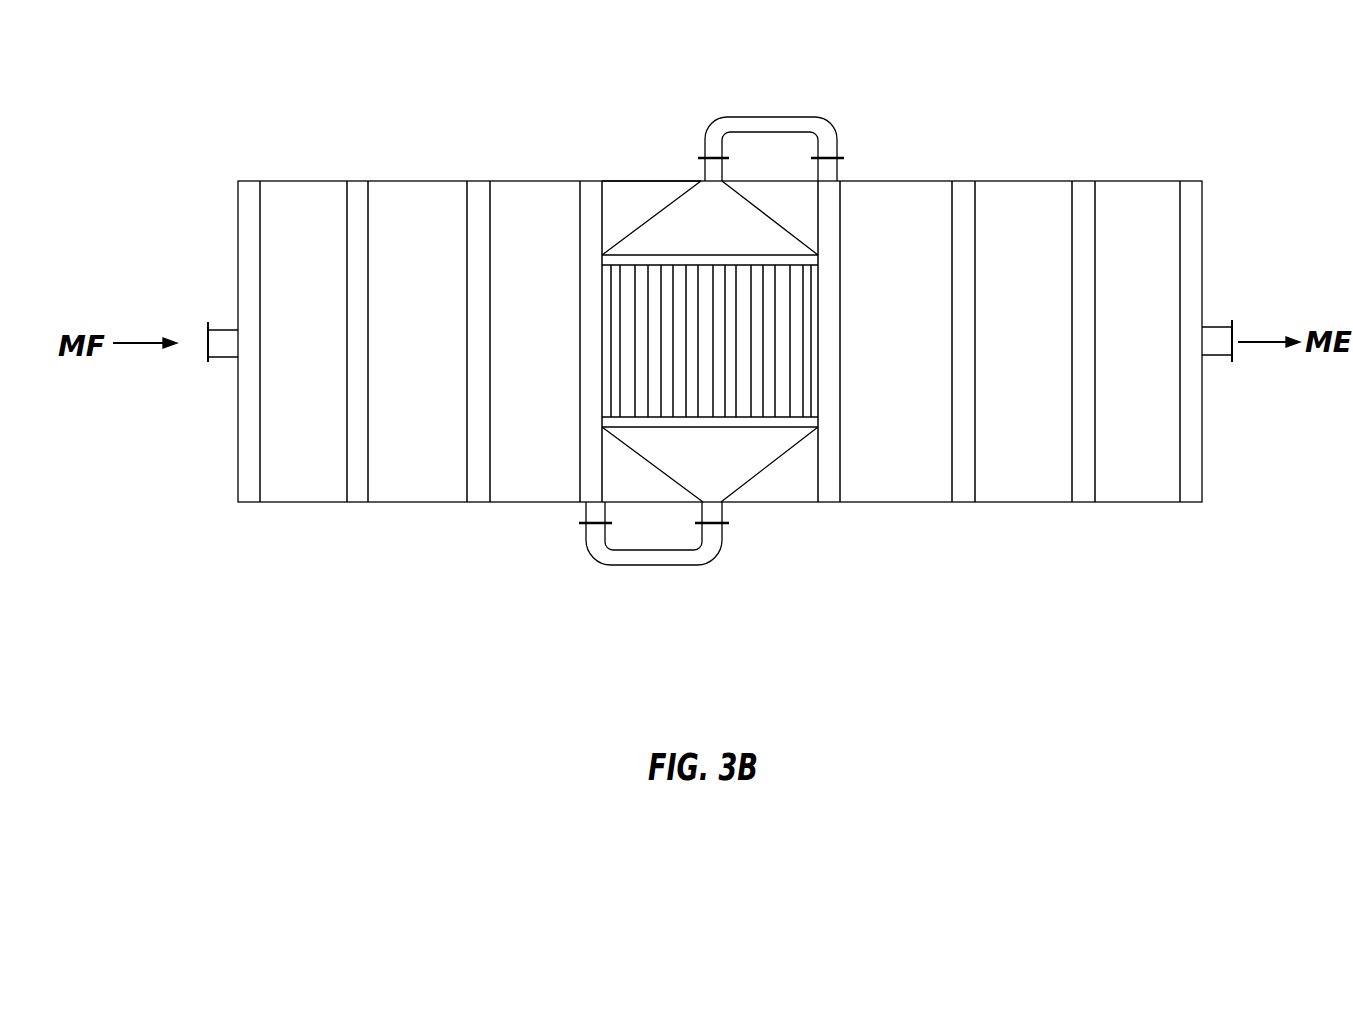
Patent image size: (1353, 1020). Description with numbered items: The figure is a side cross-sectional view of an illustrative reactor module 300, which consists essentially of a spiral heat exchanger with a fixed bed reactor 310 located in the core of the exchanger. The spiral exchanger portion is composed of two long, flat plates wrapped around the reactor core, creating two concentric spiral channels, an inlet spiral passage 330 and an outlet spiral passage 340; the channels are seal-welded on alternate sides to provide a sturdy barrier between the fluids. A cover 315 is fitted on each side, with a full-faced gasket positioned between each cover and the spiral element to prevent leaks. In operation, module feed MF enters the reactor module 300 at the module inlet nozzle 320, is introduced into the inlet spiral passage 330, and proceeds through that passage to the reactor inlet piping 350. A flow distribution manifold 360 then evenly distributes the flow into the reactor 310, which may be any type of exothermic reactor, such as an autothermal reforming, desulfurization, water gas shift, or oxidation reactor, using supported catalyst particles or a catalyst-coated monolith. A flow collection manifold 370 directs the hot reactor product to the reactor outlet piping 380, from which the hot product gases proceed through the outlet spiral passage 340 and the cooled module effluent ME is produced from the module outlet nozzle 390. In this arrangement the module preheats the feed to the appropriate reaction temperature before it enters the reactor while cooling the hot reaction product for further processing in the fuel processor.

The reactor module 300 is at (990, 611).
The fixed bed reactor 310 is at (678, 303).
The cover 315 is at (680, 179).
The module inlet nozzle 320 is at (227, 350).
The inlet spiral passage 330 is at (252, 215).
The outlet spiral passage 340 is at (1193, 223).
The reactor inlet piping 350 is at (660, 566).
The flow distribution manifold 360 is at (730, 465).
The flow collection manifold 370 is at (752, 228).
The reactor outlet piping 380 is at (765, 121).
The module outlet nozzle 390 is at (1217, 340).